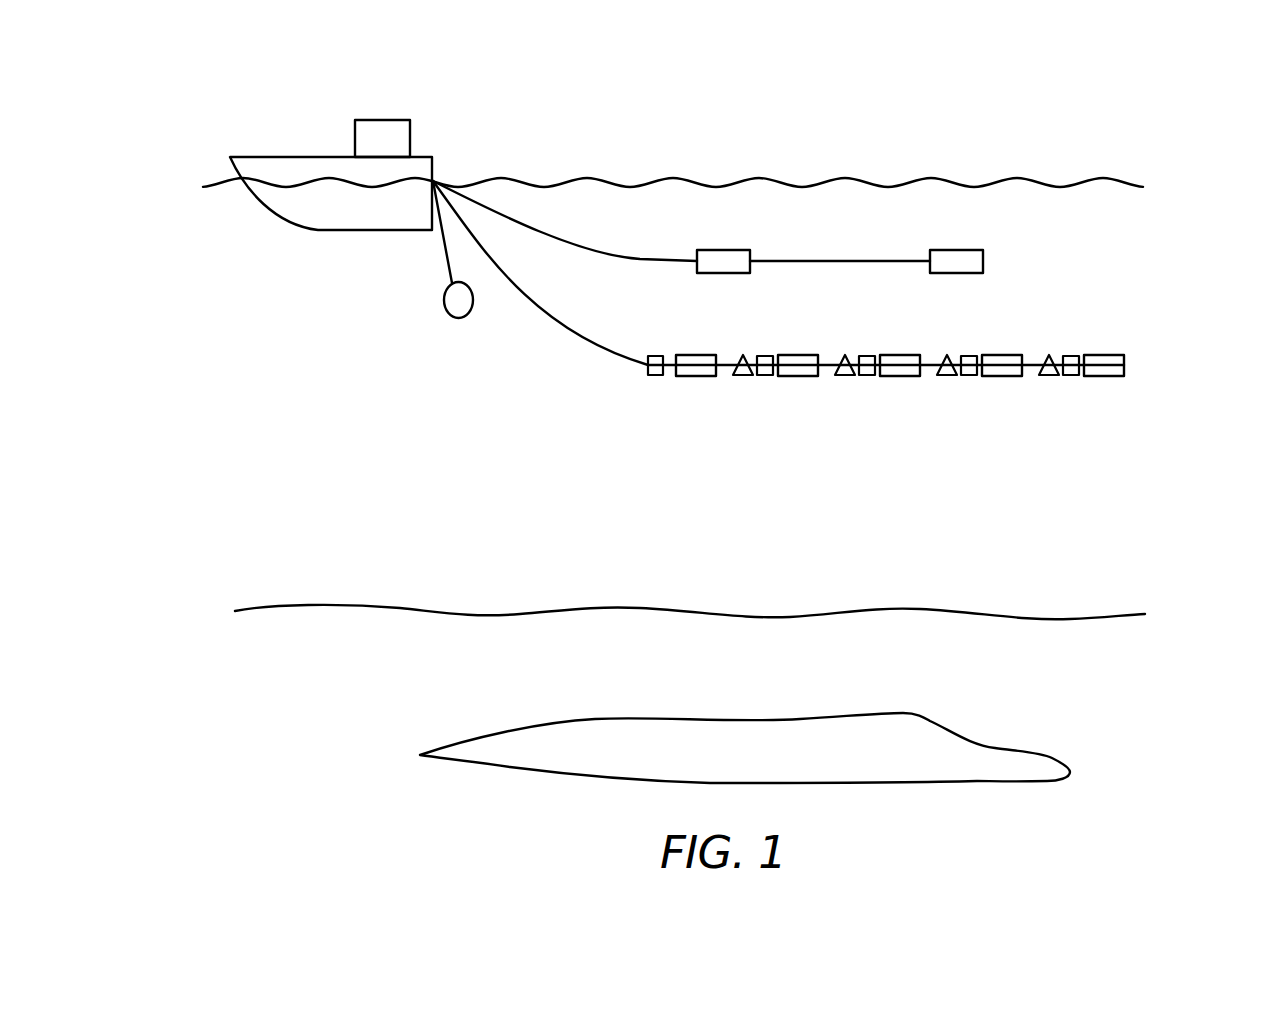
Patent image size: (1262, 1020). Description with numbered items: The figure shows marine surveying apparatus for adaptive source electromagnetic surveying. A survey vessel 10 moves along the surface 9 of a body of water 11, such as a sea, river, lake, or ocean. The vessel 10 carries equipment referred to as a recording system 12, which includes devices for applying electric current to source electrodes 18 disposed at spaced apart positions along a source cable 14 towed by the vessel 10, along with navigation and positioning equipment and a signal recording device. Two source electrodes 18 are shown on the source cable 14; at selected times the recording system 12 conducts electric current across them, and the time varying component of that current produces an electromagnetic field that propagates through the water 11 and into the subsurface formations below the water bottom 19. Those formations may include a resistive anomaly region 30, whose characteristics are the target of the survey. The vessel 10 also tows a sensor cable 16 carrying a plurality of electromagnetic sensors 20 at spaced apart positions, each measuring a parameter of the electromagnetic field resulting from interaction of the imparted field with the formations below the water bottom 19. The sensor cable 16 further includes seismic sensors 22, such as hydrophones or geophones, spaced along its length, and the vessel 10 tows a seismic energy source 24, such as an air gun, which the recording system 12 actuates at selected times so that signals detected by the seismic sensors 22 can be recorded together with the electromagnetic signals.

The surface 9 is at (1060, 187).
The survey vessel 10 is at (280, 156).
The body of water 11 is at (328, 394).
The recording system 12 is at (383, 120).
The source cable 14 is at (590, 247).
The sensor cable 16 is at (548, 322).
The source electrodes 18 is at (722, 273).
The water bottom 19 is at (495, 614).
The electromagnetic sensors 20 is at (697, 377).
The seismic sensors 22 is at (743, 377).
The seismic energy source 24 is at (460, 318).
The resistive anomaly region 30 is at (745, 748).